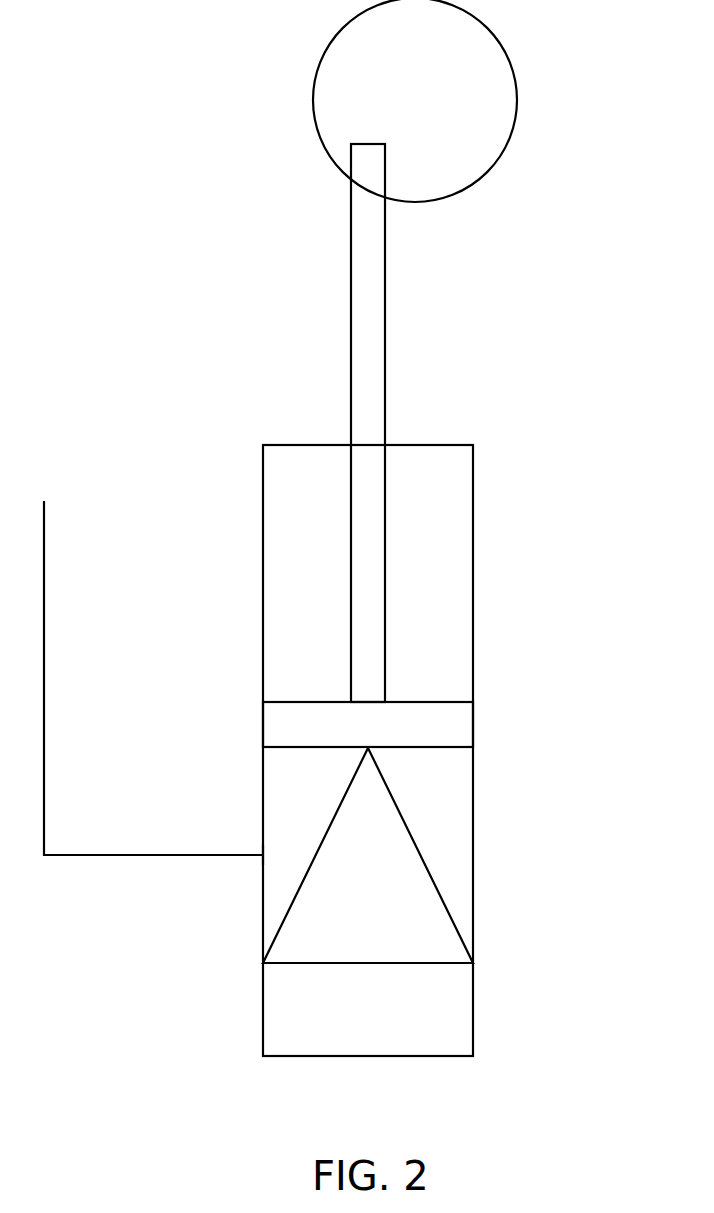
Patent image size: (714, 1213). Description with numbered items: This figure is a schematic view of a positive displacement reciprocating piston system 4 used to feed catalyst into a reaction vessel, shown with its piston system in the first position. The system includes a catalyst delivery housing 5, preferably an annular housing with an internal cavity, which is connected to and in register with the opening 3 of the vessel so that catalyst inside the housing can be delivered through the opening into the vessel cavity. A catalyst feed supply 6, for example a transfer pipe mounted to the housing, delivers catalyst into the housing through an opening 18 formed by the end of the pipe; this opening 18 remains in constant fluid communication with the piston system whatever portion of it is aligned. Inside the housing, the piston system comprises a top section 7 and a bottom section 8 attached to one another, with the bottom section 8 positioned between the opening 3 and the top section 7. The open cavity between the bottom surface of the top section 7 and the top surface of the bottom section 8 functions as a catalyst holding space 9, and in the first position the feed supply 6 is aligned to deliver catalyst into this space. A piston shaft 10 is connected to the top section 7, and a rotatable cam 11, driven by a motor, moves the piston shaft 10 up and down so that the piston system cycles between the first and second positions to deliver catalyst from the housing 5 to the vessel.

The opening 3 is at (391, 651).
The positive displacement reciprocating piston system 4 is at (417, 830).
The catalyst delivery housing 5 is at (473, 543).
The catalyst feed supply 6 is at (132, 855).
The top section 7 is at (473, 727).
The bottom section 8 is at (452, 915).
The catalyst holding space 9 is at (463, 830).
The piston shaft 10 is at (386, 330).
The rotatable cam 11 is at (518, 98).
The opening 18 is at (237, 803).